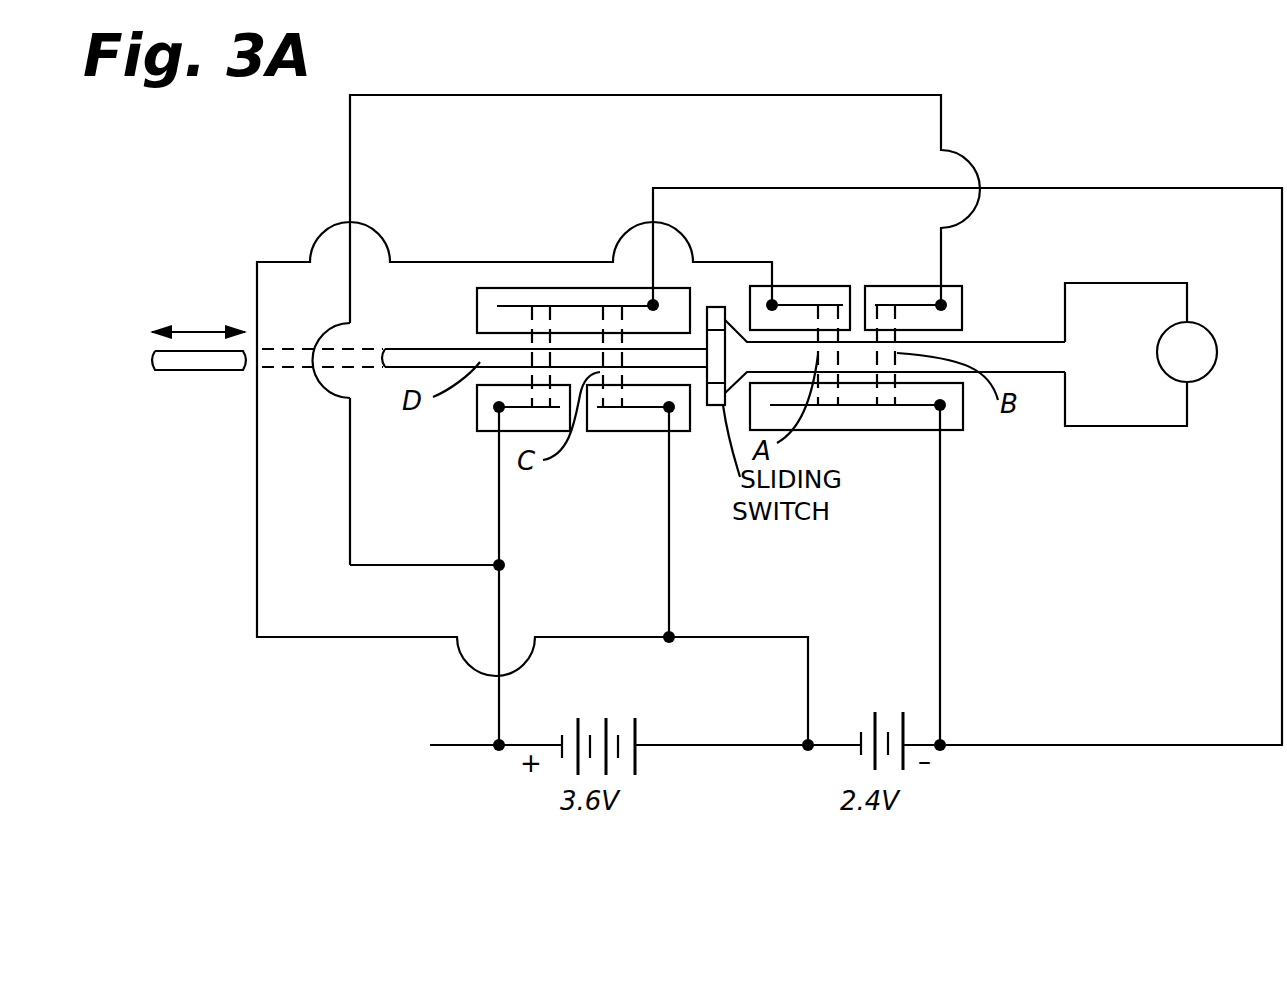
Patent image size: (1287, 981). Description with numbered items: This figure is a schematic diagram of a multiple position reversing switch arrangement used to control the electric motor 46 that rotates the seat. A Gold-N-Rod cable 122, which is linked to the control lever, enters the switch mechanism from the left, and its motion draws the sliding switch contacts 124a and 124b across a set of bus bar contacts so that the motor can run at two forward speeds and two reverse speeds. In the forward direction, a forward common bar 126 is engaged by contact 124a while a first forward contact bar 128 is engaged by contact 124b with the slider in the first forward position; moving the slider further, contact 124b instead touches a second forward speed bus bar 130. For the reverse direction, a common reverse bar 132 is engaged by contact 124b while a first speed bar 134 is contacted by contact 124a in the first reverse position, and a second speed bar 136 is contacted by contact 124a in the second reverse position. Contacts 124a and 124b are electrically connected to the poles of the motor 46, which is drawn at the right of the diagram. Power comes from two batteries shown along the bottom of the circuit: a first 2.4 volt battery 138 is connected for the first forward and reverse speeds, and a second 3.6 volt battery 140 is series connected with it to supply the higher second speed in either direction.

The electric motor 46 is at (1212, 335).
The Gold-N-Rod cable 122 is at (198, 371).
The sliding switch contact 124a is at (712, 405).
The sliding switch contact 124b is at (716, 307).
The forward common bar 126 is at (920, 405).
The first forward contact bar 128 is at (797, 303).
The second forward speed bus bar 130 is at (918, 305).
The common reverse bar 132 is at (507, 307).
The first speed bar 134 is at (655, 408).
The second speed bar 136 is at (495, 446).
The 2.4 volt battery 138 is at (885, 815).
The 3.6 volt battery 140 is at (590, 818).